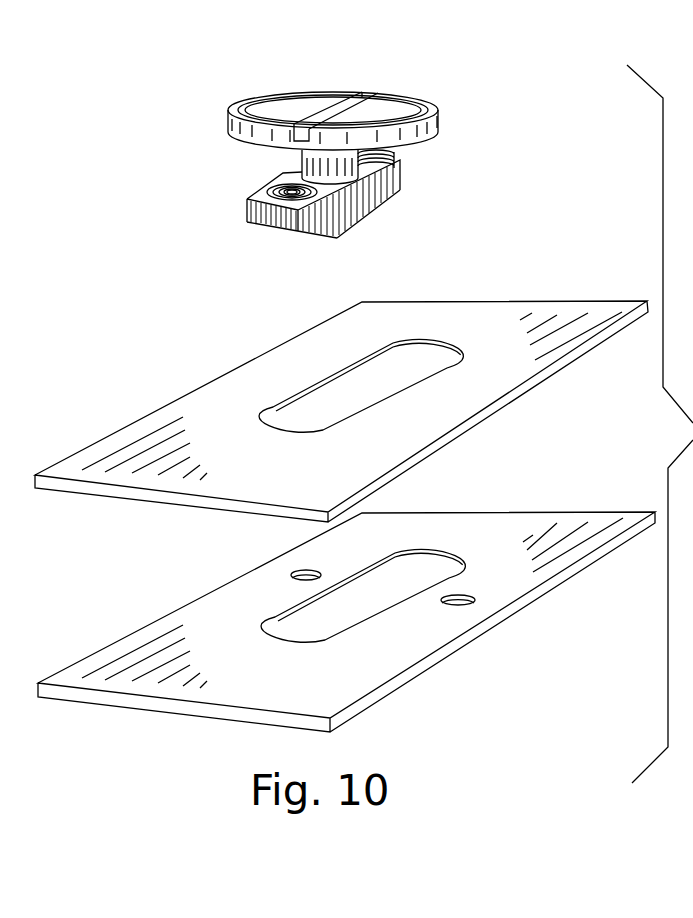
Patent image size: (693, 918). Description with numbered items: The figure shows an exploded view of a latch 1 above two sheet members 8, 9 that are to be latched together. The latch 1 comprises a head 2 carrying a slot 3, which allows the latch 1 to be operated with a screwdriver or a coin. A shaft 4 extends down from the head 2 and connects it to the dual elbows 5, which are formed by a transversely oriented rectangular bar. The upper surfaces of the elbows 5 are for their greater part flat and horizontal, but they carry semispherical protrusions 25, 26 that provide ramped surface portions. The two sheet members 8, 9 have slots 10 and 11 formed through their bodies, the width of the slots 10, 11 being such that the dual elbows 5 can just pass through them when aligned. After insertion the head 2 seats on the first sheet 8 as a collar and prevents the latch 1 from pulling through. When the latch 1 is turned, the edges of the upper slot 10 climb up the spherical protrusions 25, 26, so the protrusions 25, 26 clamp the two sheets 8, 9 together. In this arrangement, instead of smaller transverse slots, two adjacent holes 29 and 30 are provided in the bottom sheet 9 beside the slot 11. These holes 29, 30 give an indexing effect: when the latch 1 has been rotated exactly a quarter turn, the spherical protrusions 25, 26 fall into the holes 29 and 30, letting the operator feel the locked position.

The latch 1 is at (242, 98).
The head 2 is at (392, 98).
The slot 3 is at (355, 93).
The shaft 4 is at (302, 158).
The dual elbows 5 is at (395, 192).
The first sheet member 8 is at (492, 313).
The second sheet member 9 is at (530, 527).
The slot 10 is at (335, 390).
The slot 11 is at (392, 567).
The semispherical protrusion 25 is at (270, 182).
The semispherical protrusion 26 is at (398, 155).
The hole 29 is at (463, 592).
The hole 30 is at (305, 572).